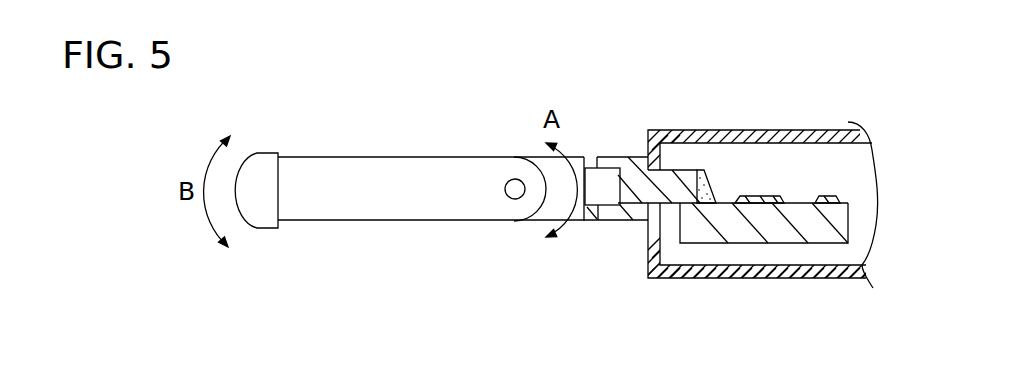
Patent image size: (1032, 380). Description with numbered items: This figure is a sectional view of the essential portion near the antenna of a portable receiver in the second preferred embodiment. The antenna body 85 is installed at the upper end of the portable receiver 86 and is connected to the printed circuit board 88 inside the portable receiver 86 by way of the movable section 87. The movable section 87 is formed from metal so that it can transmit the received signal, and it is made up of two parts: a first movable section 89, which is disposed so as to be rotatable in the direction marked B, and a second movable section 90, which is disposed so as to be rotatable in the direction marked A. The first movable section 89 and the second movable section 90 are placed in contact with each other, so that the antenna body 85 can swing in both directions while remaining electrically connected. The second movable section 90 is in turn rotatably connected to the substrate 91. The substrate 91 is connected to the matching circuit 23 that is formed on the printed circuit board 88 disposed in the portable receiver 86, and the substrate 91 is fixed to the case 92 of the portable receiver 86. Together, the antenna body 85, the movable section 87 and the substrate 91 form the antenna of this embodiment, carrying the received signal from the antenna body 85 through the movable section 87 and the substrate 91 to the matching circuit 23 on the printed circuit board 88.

The matching circuit 23 is at (763, 195).
The antenna body 85 is at (375, 158).
The portable receiver 86 is at (822, 130).
The movable section 87 is at (535, 157).
The printed circuit board 88 is at (834, 227).
The first movable section 89 is at (510, 201).
The second movable section 90 is at (610, 180).
The substrate 91 is at (631, 158).
The case 92 is at (652, 250).